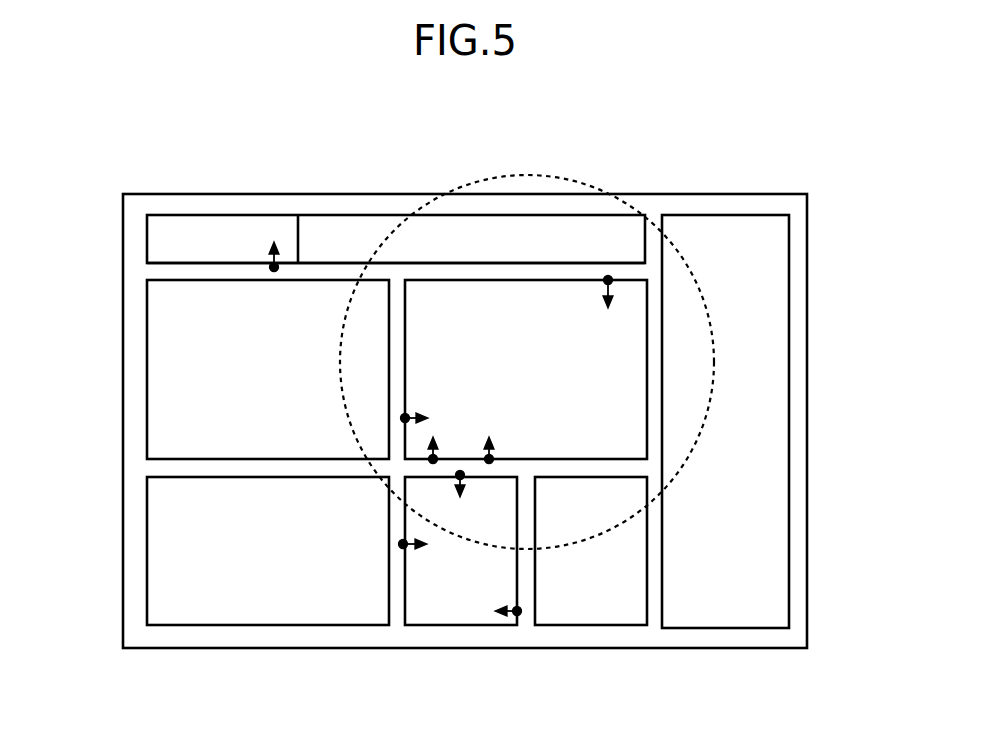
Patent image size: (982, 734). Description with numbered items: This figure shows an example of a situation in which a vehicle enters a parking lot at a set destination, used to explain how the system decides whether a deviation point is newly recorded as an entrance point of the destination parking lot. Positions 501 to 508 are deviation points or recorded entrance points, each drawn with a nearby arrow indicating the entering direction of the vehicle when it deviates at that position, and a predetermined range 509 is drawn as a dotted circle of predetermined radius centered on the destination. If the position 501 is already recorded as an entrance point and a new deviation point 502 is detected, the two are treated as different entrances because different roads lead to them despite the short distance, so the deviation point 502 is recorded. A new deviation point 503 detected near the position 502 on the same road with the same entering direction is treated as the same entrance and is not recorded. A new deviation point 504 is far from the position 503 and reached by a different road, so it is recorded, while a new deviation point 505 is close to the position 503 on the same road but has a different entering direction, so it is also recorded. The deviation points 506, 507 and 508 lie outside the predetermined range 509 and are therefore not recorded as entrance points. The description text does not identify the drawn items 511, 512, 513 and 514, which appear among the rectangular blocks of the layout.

The position 501 is at (402, 418).
The new deviation point 502 is at (430, 461).
The new deviation point 503 is at (490, 462).
The new deviation point 504 is at (608, 276).
The new deviation point 505 is at (463, 477).
The deviation point 506 is at (401, 547).
The deviation point 507 is at (520, 612).
The deviation point 508 is at (274, 270).
The predetermined range 509 is at (542, 175).
The window 511 is at (397, 354).
The boundary 512 is at (472, 467).
The boundary 513 is at (469, 272).
The boundary 514 is at (530, 533).